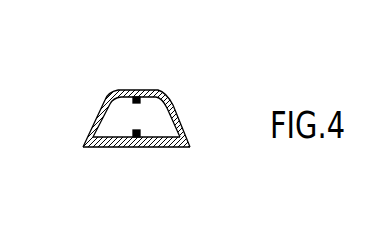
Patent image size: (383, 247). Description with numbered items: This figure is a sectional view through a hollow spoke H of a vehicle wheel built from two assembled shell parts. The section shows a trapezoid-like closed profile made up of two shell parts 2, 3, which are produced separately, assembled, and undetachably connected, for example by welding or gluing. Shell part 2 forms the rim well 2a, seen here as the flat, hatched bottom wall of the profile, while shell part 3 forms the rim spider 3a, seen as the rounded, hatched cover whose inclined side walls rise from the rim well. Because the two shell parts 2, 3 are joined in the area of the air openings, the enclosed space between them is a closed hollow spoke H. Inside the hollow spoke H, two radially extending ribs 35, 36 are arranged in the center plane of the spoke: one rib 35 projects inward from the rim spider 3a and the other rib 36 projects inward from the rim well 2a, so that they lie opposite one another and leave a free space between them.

The shell part 2 is at (176, 146).
The rim well 2a is at (153, 146).
The shell part 3 is at (155, 87).
The rim spider 3a is at (95, 122).
The rib 35 is at (137, 93).
The rib 36 is at (135, 143).
The hollow spoke H is at (165, 110).